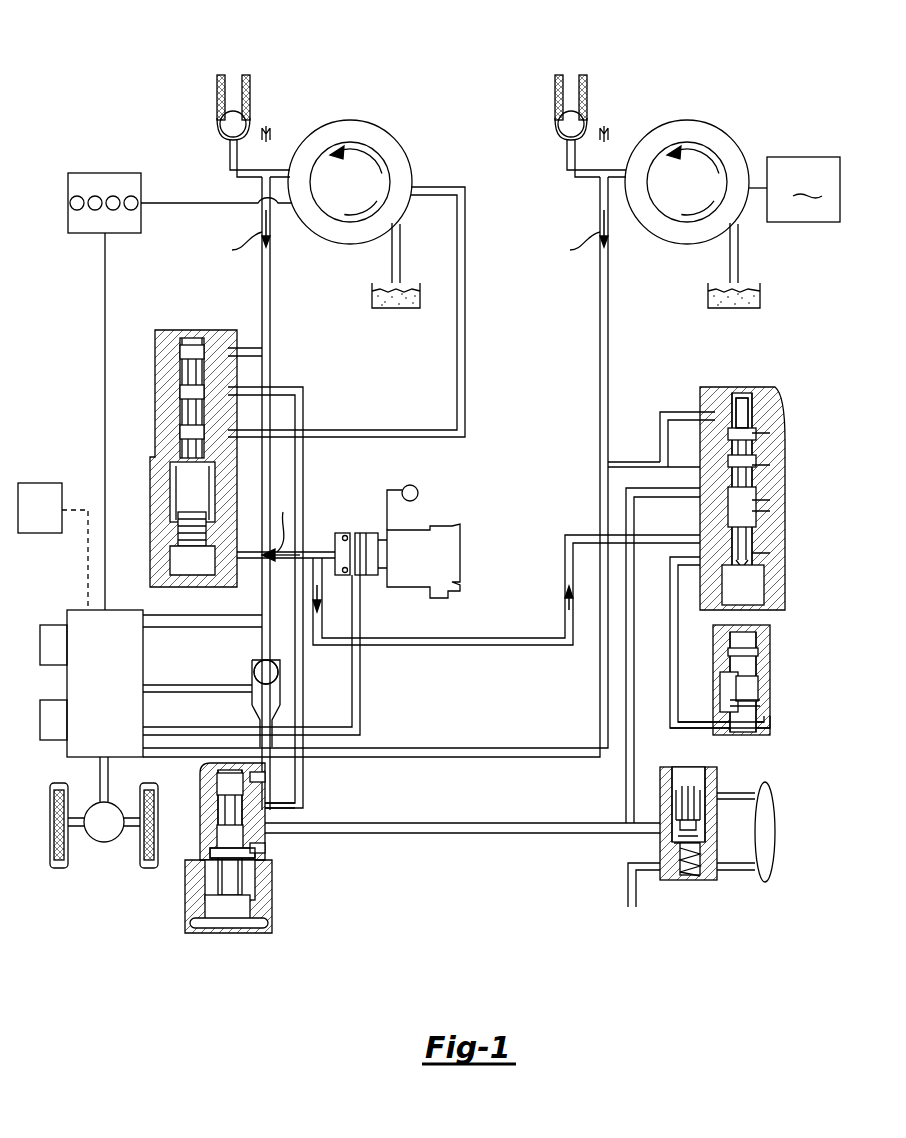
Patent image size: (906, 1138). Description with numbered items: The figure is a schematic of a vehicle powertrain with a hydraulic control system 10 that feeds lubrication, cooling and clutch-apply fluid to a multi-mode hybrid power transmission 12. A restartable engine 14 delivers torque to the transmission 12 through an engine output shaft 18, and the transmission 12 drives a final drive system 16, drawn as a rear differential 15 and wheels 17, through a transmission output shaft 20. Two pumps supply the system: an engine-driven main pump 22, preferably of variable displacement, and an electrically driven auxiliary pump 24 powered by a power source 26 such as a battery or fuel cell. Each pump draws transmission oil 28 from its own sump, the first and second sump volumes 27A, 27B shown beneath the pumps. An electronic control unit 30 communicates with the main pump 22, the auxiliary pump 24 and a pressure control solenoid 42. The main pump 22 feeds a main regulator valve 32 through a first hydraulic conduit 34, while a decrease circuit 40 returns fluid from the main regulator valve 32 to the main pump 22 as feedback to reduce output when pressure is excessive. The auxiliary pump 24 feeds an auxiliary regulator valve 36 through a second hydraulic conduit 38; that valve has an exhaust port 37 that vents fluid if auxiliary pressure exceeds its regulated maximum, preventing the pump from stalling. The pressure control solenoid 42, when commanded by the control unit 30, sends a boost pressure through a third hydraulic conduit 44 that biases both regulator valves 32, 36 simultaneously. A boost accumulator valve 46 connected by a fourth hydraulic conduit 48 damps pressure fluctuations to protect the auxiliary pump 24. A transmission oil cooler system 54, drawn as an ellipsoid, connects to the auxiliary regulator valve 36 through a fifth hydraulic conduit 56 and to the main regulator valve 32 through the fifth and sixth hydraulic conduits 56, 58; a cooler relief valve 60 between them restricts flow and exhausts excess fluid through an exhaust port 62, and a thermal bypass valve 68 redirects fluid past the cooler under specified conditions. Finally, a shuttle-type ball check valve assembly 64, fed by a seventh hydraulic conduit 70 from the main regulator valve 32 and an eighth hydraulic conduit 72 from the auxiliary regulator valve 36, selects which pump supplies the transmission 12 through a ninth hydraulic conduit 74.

The hydraulic control system 10 is at (482, 128).
The power transmission 12 is at (118, 610).
The restartable engine 14 is at (104, 173).
The rear differential 15 is at (104, 842).
The final drive system 16 is at (100, 902).
The wheels 17 is at (57, 868).
The engine output shaft 18 is at (105, 357).
The transmission output shaft 20 is at (100, 790).
The main pump 22 is at (348, 120).
The auxiliary pump 24 is at (686, 120).
The power source 26 is at (794, 189).
The first sump 27A is at (372, 302).
The second sump 27B is at (708, 302).
The transmission oil 28 is at (408, 288).
The electronic control unit 30 is at (40, 483).
The main regulator valve 32 is at (190, 328).
The first hydraulic conduit 34 is at (270, 283).
The auxiliary regulator valve 36 is at (752, 385).
The exhaust port 37 is at (785, 445).
The second hydraulic conduit 38 is at (600, 357).
The decrease circuit 40 is at (391, 430).
The pressure control solenoid 42 is at (445, 528).
The third hydraulic conduit 44 is at (318, 552).
The boost accumulator valve 46 is at (775, 640).
The fourth hydraulic conduit 48 is at (705, 733).
The transmission oil cooler system 54 is at (775, 830).
The fifth hydraulic conduit 56 is at (625, 787).
The sixth hydraulic conduit 58 is at (303, 777).
The cooler relief valve 60 is at (275, 888).
The exhaust port 62 is at (205, 852).
The ball check valve assembly 64 is at (252, 670).
The thermal bypass valve 68 is at (690, 883).
The seventh hydraulic conduit 70 is at (276, 654).
The eighth hydraulic conduit 72 is at (258, 722).
The ninth hydraulic conduit 74 is at (182, 685).